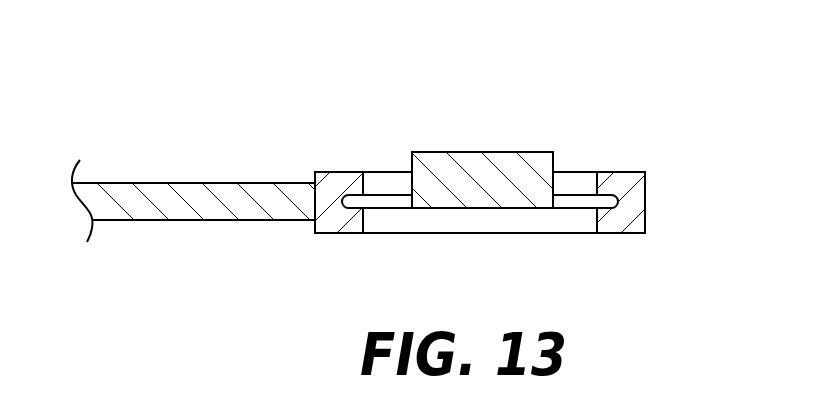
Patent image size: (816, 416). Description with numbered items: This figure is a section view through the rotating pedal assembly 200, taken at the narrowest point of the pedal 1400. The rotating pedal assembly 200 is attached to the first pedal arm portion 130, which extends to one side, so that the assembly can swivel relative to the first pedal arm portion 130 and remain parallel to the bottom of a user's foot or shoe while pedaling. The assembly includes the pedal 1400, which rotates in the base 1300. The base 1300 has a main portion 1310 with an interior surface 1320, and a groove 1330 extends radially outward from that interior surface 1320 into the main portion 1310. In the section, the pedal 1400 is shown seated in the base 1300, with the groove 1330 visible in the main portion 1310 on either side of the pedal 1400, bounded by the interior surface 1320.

The first pedal arm portion 130 is at (160, 197).
The rotating pedal assembly 200 is at (686, 70).
The base 1300 is at (638, 188).
The main portion 1310 is at (637, 217).
The interior surface 1320 is at (573, 180).
The groove 1330 is at (380, 200).
The pedal 1400 is at (505, 158).